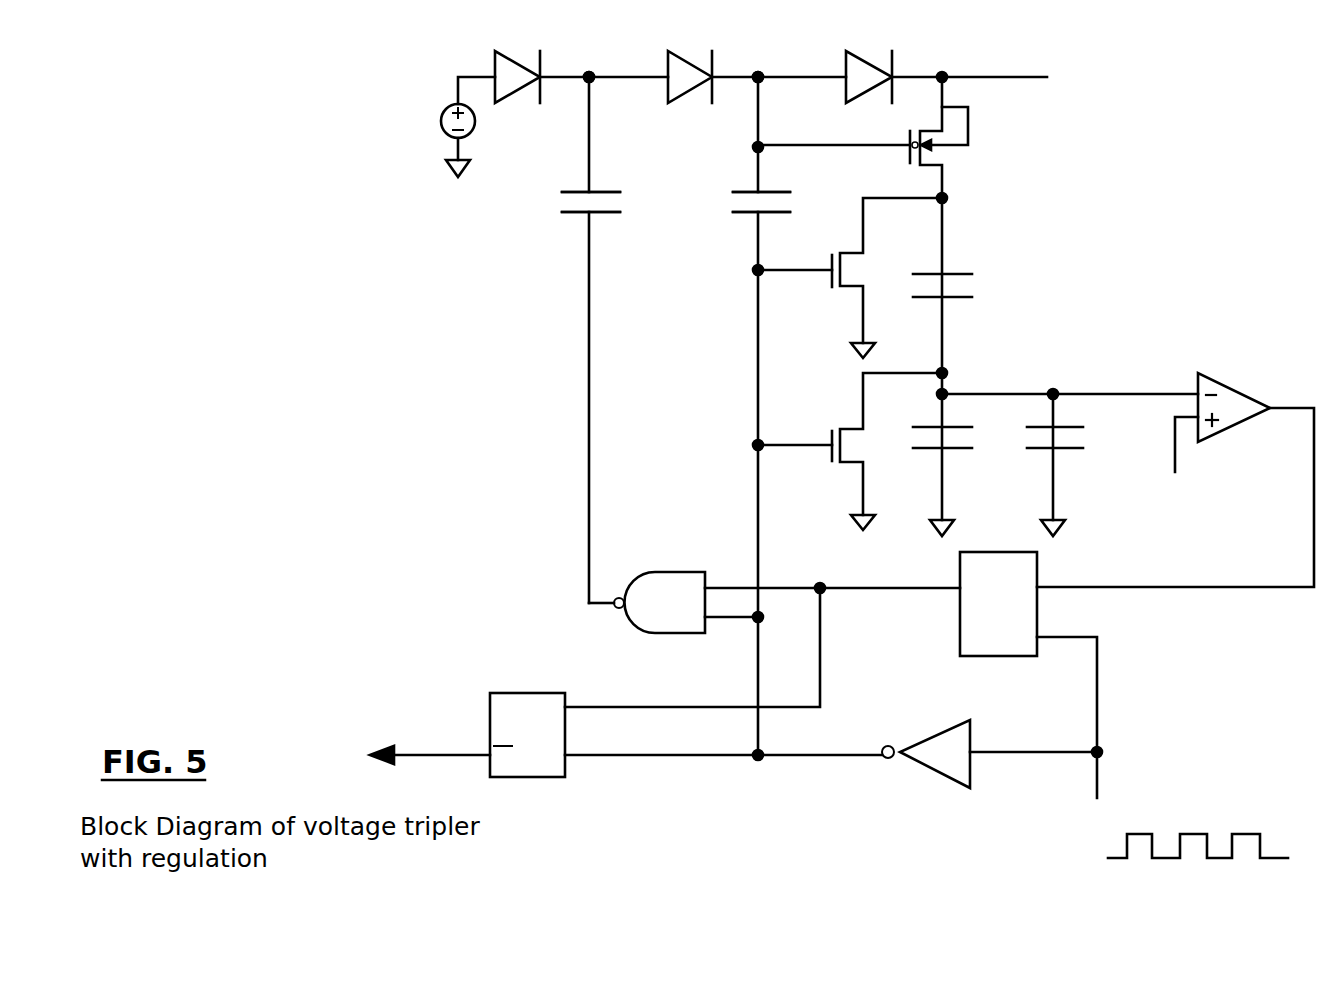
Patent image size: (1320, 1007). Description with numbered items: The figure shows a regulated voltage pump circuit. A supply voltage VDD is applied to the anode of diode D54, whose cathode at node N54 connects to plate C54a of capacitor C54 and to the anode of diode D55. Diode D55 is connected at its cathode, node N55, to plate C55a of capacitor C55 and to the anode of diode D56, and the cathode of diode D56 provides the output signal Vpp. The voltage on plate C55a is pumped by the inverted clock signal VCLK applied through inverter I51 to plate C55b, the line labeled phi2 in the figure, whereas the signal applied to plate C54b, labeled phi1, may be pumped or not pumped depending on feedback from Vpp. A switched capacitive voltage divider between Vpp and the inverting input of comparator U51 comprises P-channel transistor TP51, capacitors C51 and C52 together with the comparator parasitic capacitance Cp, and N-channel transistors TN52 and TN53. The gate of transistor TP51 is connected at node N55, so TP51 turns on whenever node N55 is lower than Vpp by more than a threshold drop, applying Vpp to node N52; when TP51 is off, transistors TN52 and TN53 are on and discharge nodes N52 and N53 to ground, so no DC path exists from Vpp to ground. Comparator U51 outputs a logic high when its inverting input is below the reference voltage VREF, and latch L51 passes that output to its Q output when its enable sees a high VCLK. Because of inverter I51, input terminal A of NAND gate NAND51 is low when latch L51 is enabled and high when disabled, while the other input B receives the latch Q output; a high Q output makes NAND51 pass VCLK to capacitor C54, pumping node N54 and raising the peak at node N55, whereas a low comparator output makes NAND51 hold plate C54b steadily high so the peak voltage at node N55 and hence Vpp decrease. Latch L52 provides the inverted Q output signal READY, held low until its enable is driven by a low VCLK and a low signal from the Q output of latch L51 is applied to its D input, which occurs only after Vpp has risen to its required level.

The diode D54 is at (512, 70).
The diode D55 is at (684, 72).
The diode D56 is at (860, 70).
The node N54 is at (590, 72).
The node N55 is at (759, 71).
The node N52 is at (948, 198).
The node N53 is at (948, 372).
The P-channel transistor TP51 is at (968, 120).
The N-channel transistor TN52 is at (828, 288).
The N-channel transistor TN53 is at (828, 463).
The capacitor C51 is at (971, 296).
The capacitor C52 is at (958, 465).
The capacitor C54 is at (618, 340).
The plate of capacitor C54 C54a is at (581, 190).
The plate of capacitor C54 C54b is at (580, 214).
The capacitor C55 is at (781, 456).
The plate of capacitor C55 C55a is at (752, 190).
The plate of capacitor C55 C55b is at (750, 214).
The comparator parasitic capacitance Cp is at (1077, 465).
The comparator U51 is at (1228, 388).
The NAND gate NAND51 is at (668, 570).
The input terminal of NAND gate NAND51 A is at (723, 622).
The NAND input B is at (718, 583).
The latch L51 is at (958, 616).
The latch L52 is at (488, 712).
The inverter I51 is at (940, 766).
The supply voltage VDD is at (413, 140).
The output signal Vpp is at (1143, 74).
The reference voltage VREF is at (1192, 466).
The clock signal VCLK is at (1198, 817).
The inverted Q output signal of latch L52 READY is at (373, 761).
The clock phase 1 phi1 is at (612, 551).
The clock phase 2 phi2 is at (800, 551).